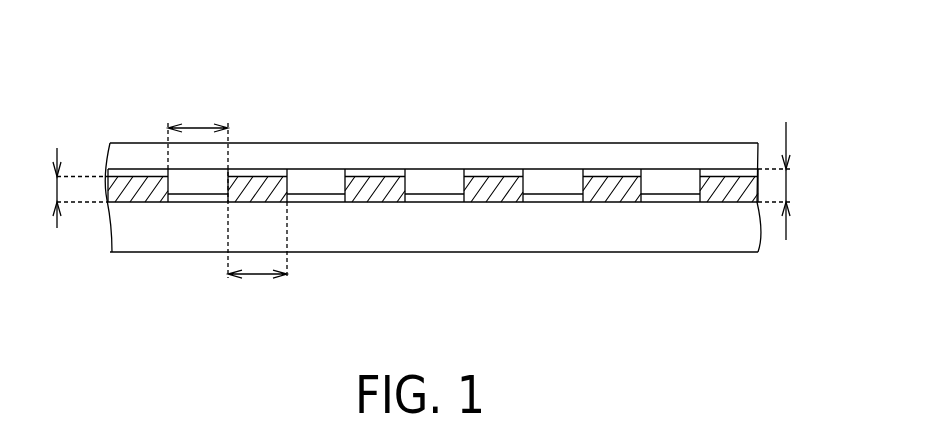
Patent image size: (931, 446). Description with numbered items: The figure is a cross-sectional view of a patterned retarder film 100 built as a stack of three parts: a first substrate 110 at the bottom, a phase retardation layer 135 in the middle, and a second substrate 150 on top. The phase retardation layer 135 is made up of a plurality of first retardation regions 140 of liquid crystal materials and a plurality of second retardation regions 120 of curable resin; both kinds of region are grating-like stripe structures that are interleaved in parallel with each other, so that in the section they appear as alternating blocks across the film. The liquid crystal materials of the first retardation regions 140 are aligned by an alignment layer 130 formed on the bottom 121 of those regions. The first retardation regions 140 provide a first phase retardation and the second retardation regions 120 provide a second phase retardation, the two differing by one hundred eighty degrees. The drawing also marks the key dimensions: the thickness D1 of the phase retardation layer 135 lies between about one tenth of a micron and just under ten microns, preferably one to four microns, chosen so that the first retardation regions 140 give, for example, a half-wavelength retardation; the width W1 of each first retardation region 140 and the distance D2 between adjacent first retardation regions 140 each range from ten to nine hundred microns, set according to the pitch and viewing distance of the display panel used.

The patterned retarder film 100 is at (862, 49).
The first substrate 110 is at (727, 230).
The second retardation regions 120 is at (495, 190).
The bottom of the first retardation regions 121 is at (663, 197).
The alignment layer 130 is at (434, 190).
The phase retardation layer 135 is at (799, 181).
The first retardation regions 140 is at (320, 187).
The second substrate 150 is at (733, 160).
The thickness of phase retardation layer D1 is at (59, 188).
The width of first retardation region W1 is at (198, 183).
The distance between adjacent first retardation regions D2 is at (257, 259).